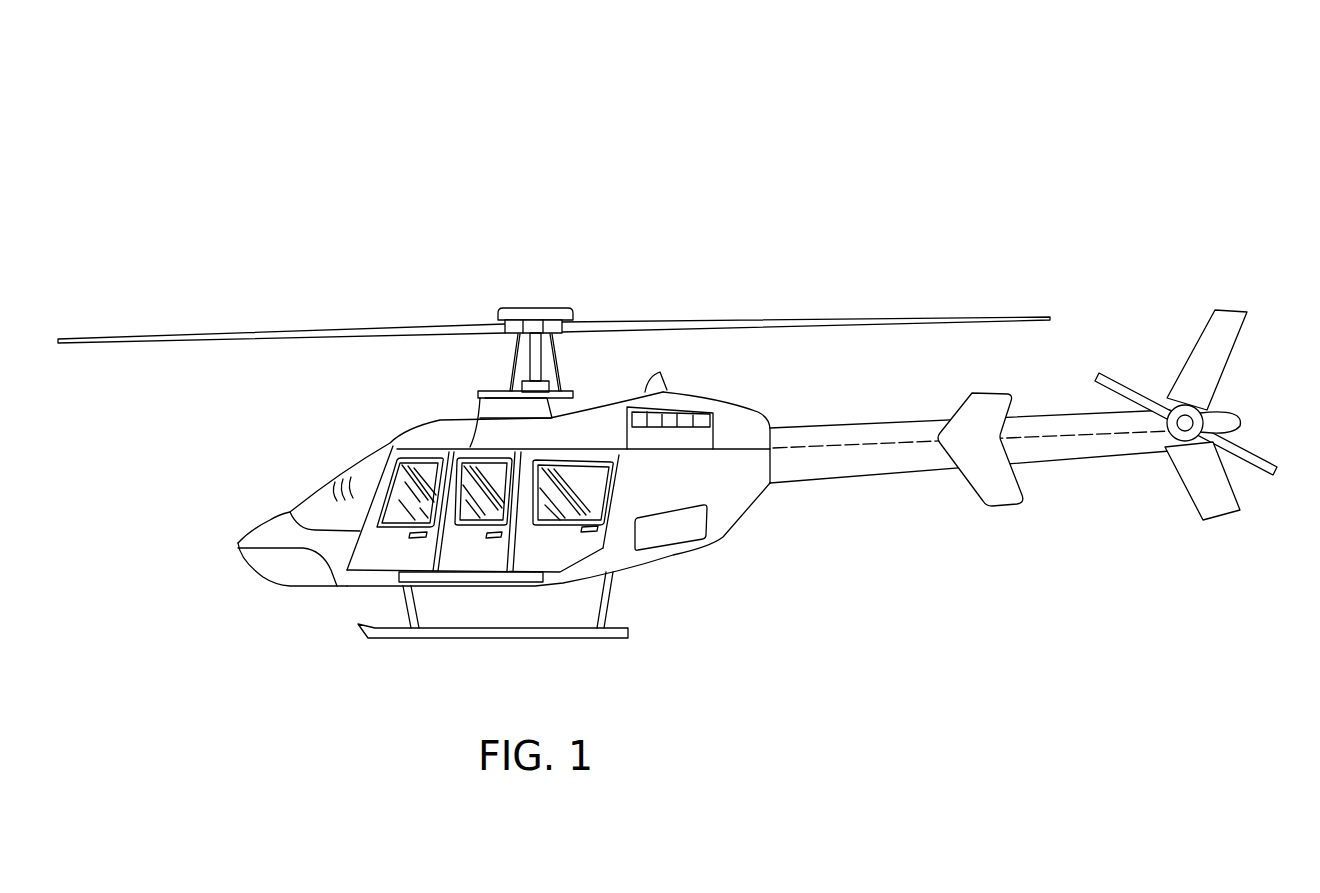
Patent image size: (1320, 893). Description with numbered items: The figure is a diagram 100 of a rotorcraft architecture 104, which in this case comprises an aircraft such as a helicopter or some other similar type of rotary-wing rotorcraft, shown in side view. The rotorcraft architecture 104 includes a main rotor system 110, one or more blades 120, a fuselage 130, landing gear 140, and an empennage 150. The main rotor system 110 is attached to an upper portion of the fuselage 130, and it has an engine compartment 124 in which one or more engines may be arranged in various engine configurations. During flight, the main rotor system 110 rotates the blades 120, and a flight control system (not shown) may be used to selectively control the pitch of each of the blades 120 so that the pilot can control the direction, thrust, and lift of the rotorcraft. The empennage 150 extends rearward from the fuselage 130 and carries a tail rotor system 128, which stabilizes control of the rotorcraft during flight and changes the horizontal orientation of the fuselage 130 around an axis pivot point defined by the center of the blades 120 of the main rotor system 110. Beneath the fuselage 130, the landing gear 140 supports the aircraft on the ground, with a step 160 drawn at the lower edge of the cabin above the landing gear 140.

The diagram 100 is at (356, 113).
The rotorcraft architecture 104 is at (733, 123).
The main rotor system 110 is at (537, 306).
The blades 120 is at (770, 320).
The engine compartment 124 is at (686, 380).
The tail rotor system 128 is at (1146, 360).
The fuselage 130 is at (286, 585).
The landing gear 140 is at (538, 638).
The empennage 150 is at (873, 477).
The step 160 is at (467, 582).